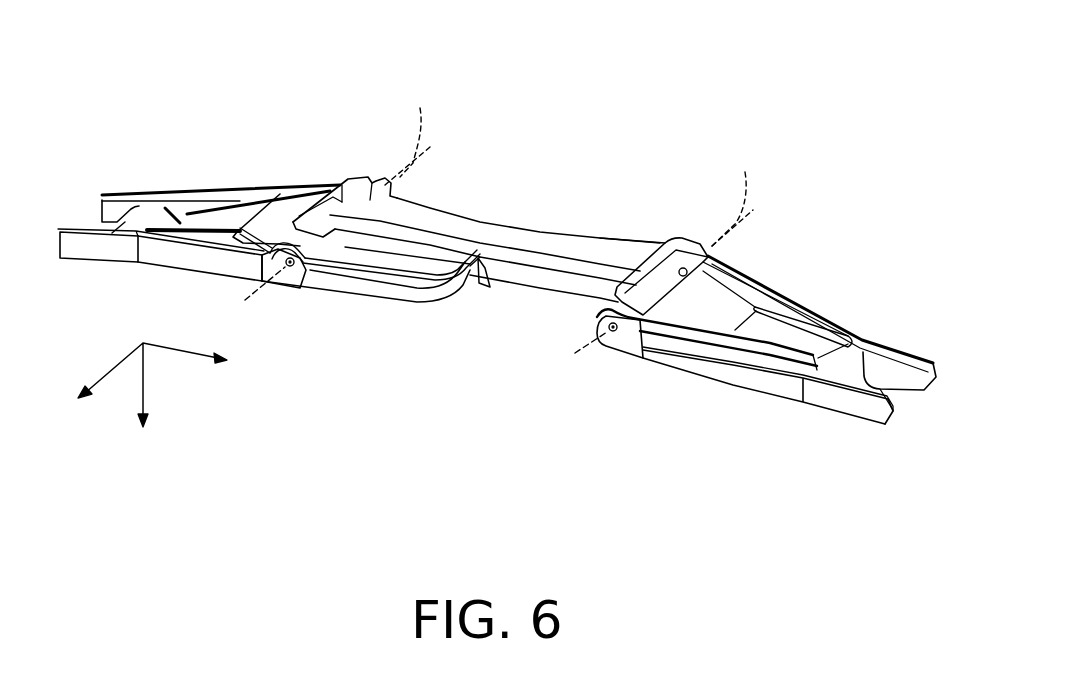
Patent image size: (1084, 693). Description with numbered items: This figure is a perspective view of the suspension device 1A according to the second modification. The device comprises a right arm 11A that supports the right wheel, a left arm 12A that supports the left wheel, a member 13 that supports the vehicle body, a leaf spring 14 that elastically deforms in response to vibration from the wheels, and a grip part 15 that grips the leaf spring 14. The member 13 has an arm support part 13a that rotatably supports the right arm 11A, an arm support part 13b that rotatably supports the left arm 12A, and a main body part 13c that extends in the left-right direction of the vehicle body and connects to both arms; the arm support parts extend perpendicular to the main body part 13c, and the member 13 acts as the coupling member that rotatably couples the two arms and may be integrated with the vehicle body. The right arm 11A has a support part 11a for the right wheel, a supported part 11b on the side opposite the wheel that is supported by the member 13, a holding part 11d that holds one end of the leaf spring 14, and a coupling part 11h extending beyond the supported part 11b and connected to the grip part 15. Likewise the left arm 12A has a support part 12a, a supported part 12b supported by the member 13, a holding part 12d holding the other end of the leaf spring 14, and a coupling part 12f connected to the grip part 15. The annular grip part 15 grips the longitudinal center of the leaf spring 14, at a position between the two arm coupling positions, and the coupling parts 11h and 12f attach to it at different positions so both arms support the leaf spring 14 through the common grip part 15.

The suspension device 1A is at (540, 177).
The right arm 11A is at (228, 187).
The support part 11a is at (180, 258).
The supported part 11b is at (290, 278).
The holding part 11d is at (188, 222).
The coupling part 11h is at (360, 288).
The left arm 12A is at (896, 343).
The support part 12a is at (733, 369).
The supported part 12b is at (623, 347).
The holding part 12d is at (784, 336).
The coupling part 12f is at (623, 236).
The member 13 is at (502, 215).
The arm support part 13a is at (343, 194).
The arm support part 13b is at (682, 248).
The main body part 13c is at (444, 224).
The leaf spring 14 is at (551, 290).
The grip part 15 is at (490, 293).